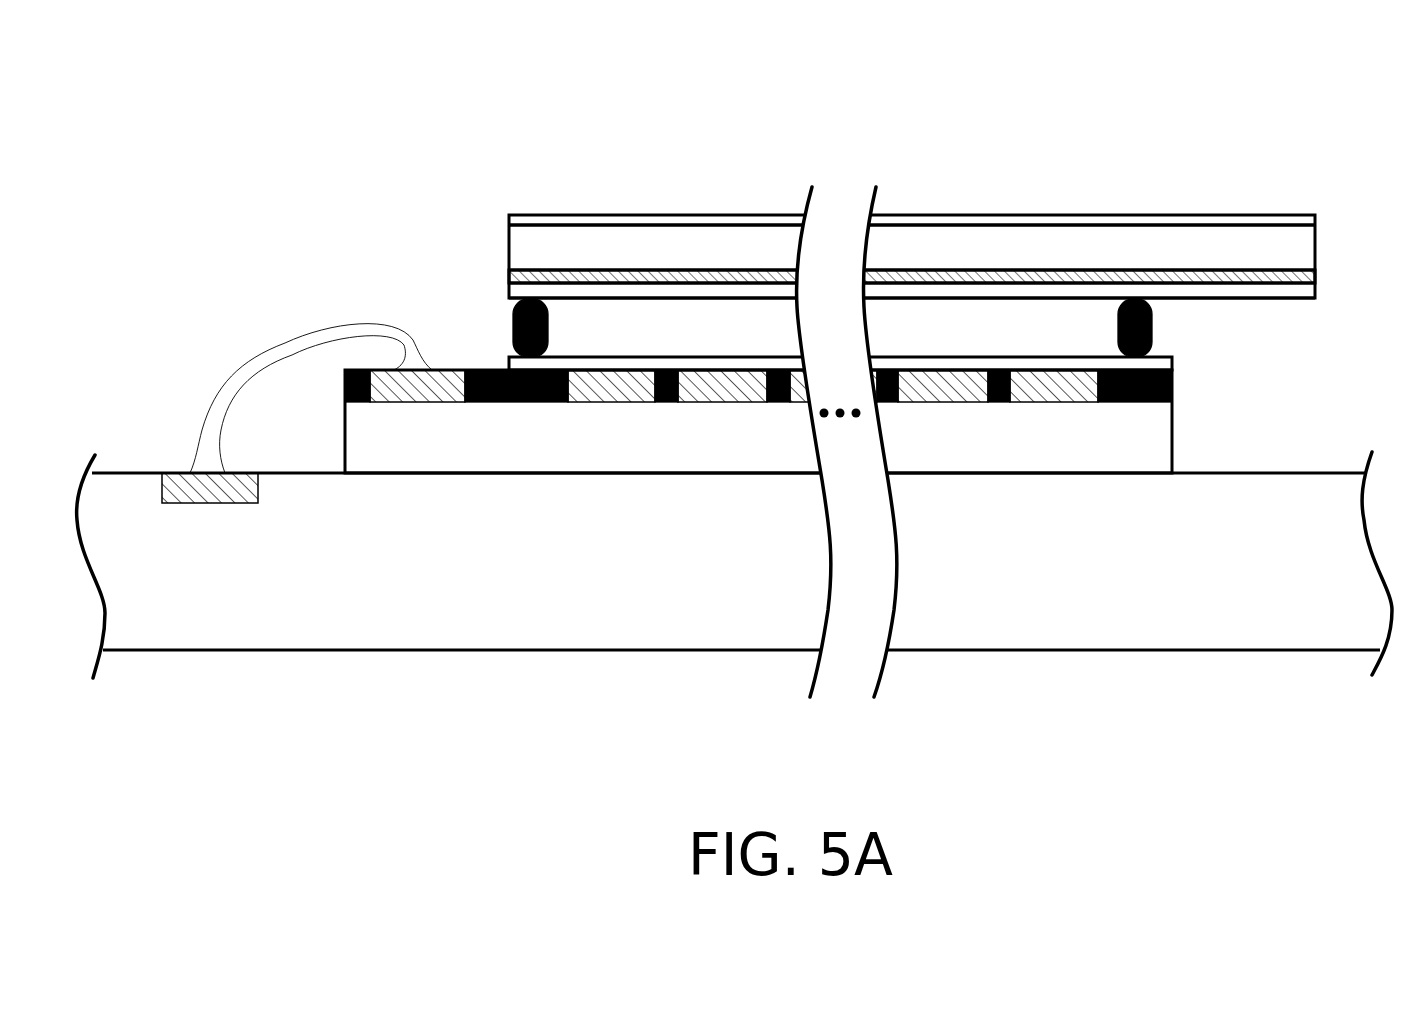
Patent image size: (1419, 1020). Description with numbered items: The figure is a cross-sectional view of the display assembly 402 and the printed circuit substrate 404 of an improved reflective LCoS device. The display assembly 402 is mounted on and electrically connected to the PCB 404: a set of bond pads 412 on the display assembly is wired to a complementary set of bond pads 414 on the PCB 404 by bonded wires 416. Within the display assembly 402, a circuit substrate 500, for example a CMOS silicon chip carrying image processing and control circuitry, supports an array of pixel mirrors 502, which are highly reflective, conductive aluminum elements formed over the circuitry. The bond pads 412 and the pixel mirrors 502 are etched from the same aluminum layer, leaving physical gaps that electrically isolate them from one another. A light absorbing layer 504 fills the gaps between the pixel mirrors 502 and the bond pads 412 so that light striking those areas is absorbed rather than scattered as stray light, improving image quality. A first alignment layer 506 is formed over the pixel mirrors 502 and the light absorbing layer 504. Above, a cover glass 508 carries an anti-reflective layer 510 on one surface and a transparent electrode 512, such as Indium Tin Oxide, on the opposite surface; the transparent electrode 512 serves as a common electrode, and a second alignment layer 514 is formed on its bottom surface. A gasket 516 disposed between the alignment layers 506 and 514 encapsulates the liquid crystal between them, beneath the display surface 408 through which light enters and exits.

The display assembly 402 is at (466, 88).
The printed circuit substrate 404 is at (595, 598).
The display surface 408 is at (1035, 213).
The bond pads 412 is at (412, 388).
The bond pads 414 is at (181, 490).
The bonded wires 416 is at (258, 362).
The circuit substrate 500 is at (1152, 440).
The pixel mirrors 502 is at (607, 388).
The light absorbing layer 504 is at (503, 371).
The first alignment layer 506 is at (1172, 358).
The cover glass 508 is at (1300, 247).
The anti-reflective layer 510 is at (1300, 218).
The transparent electrode 512 is at (1300, 275).
The second alignment layer 514 is at (1300, 295).
The gasket 516 is at (1153, 325).